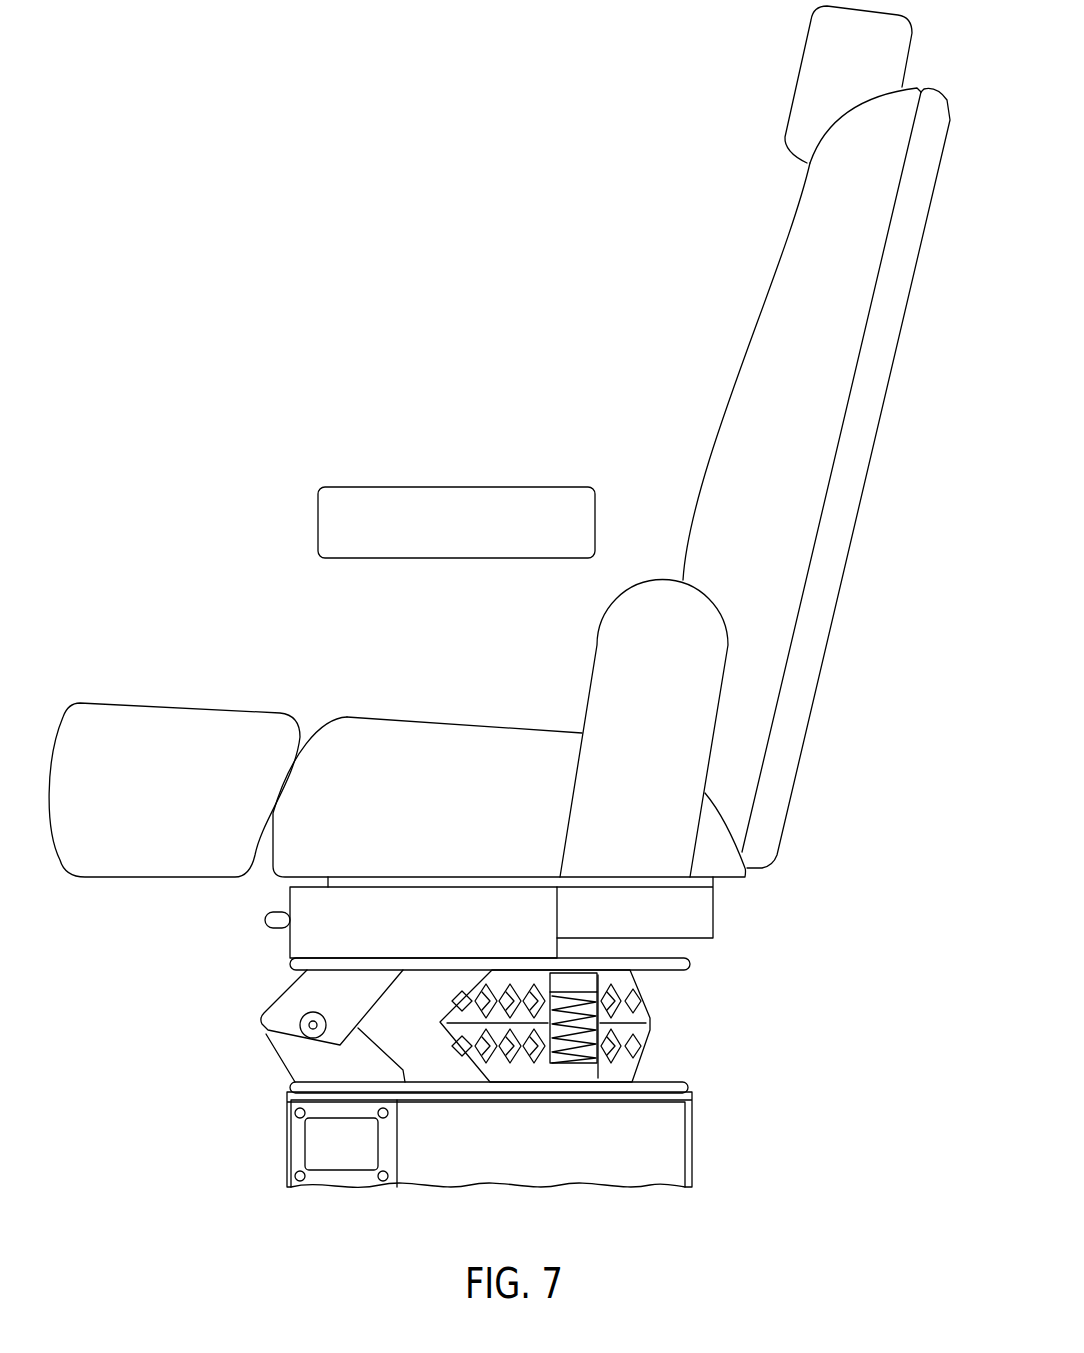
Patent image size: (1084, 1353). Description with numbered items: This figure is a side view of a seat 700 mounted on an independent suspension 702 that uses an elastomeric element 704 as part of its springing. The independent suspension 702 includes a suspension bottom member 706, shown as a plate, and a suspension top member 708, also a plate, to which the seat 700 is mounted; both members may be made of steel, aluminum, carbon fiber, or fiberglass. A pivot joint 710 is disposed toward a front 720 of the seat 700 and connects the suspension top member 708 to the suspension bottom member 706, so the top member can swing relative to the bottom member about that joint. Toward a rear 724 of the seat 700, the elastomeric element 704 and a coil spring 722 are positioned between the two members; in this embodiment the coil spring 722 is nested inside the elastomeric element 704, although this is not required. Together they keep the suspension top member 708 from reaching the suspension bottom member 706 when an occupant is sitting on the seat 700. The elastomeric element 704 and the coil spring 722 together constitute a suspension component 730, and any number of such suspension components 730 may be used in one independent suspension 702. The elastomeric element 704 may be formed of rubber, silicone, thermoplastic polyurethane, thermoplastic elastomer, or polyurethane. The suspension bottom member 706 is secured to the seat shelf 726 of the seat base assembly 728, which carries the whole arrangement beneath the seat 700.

The seat 700 is at (783, 305).
The independent suspension 702 is at (228, 1007).
The elastomeric element 704 is at (650, 1013).
The suspension bottom member 706 is at (658, 1087).
The suspension top member 708 is at (690, 963).
The pivot joint 710 is at (313, 1025).
The front 720 is at (227, 907).
The coil spring 722 is at (573, 1038).
The rear 724 is at (790, 848).
The seat shelf 726 is at (432, 1087).
The seat base assembly 728 is at (548, 1158).
The suspension component 730 is at (657, 1048).